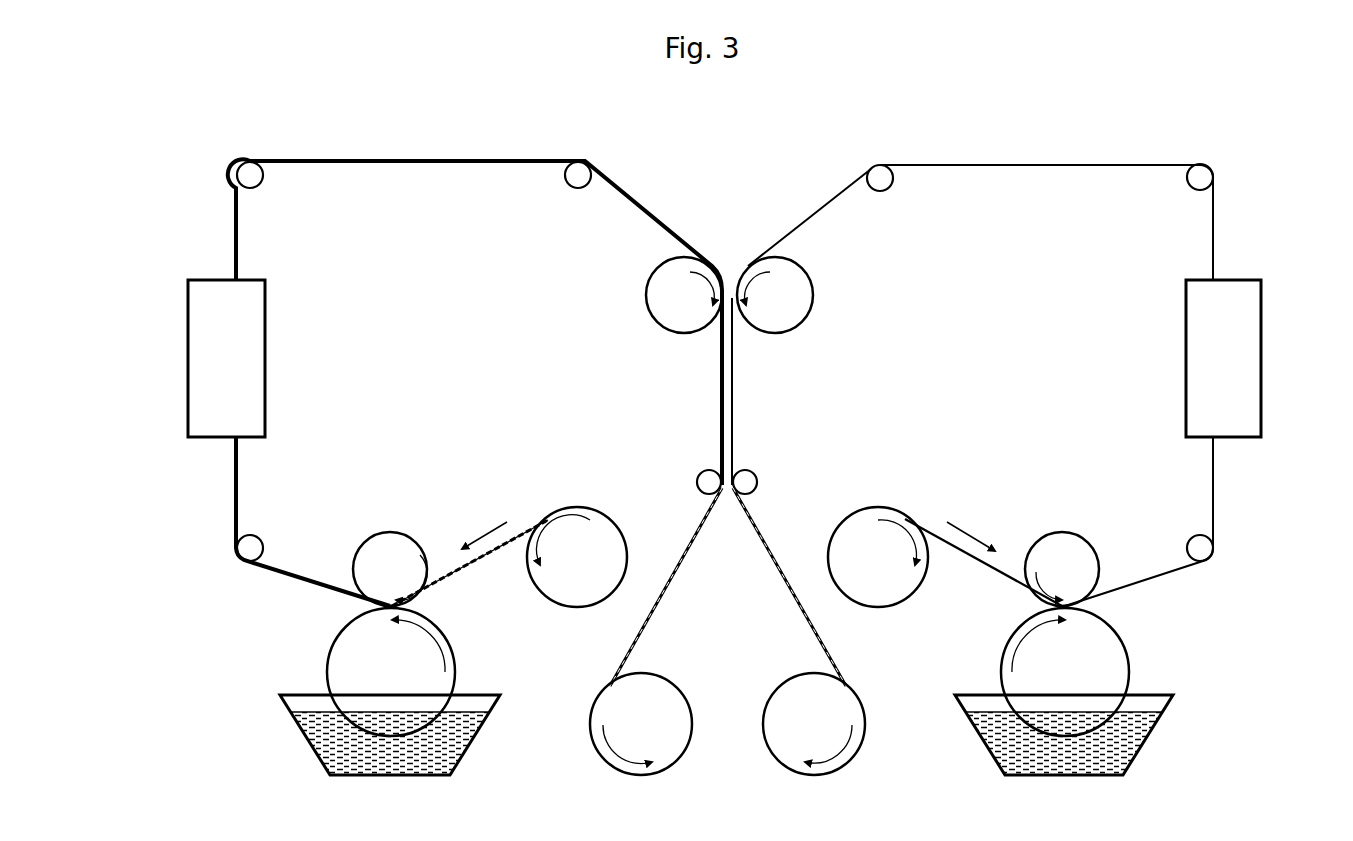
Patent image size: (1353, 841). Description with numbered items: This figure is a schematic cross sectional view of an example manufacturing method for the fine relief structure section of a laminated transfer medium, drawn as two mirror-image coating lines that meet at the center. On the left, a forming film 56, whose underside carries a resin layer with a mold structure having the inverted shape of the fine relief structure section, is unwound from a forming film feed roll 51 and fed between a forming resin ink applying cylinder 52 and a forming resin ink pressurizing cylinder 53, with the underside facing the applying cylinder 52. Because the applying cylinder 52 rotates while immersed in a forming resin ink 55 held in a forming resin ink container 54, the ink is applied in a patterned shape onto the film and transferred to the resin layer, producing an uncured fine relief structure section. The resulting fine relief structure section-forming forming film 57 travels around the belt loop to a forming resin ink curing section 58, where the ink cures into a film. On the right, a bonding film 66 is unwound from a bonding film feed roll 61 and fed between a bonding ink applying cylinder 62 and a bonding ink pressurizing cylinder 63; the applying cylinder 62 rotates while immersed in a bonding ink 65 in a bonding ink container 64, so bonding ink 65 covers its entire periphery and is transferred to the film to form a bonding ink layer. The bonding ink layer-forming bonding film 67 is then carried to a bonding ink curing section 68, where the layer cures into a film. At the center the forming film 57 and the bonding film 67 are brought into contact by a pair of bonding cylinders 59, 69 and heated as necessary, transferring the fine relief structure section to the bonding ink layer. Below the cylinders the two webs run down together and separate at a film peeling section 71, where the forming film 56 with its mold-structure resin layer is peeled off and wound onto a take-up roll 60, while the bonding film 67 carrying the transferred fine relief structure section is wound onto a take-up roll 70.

The forming film feed roll 51 is at (590, 517).
The forming resin ink applying cylinder 52 is at (340, 650).
The forming resin ink pressurizing cylinder 53 is at (390, 540).
The forming resin ink container 54 is at (307, 693).
The forming resin ink 55 is at (338, 762).
The forming film 56 is at (480, 555).
The fine relief structure section-forming forming film 57 is at (312, 580).
The forming resin ink curing section 58 is at (255, 360).
The bonding cylinder 59 is at (672, 290).
The take-up roll 60 is at (640, 672).
The bonding film feed roll 61 is at (865, 512).
The bonding ink applying cylinder 62 is at (1115, 650).
The bonding ink pressurizing cylinder 63 is at (1062, 535).
The bonding ink container 64 is at (1173, 693).
The bonding ink 65 is at (1115, 762).
The bonding film 66 is at (973, 555).
The bonding ink layer-forming bonding film 67 is at (1168, 572).
The bonding ink curing section 68 is at (1197, 360).
The bonding cylinder 69 is at (790, 292).
The take-up roll 70 is at (815, 672).
The film peeling section 71 is at (727, 492).